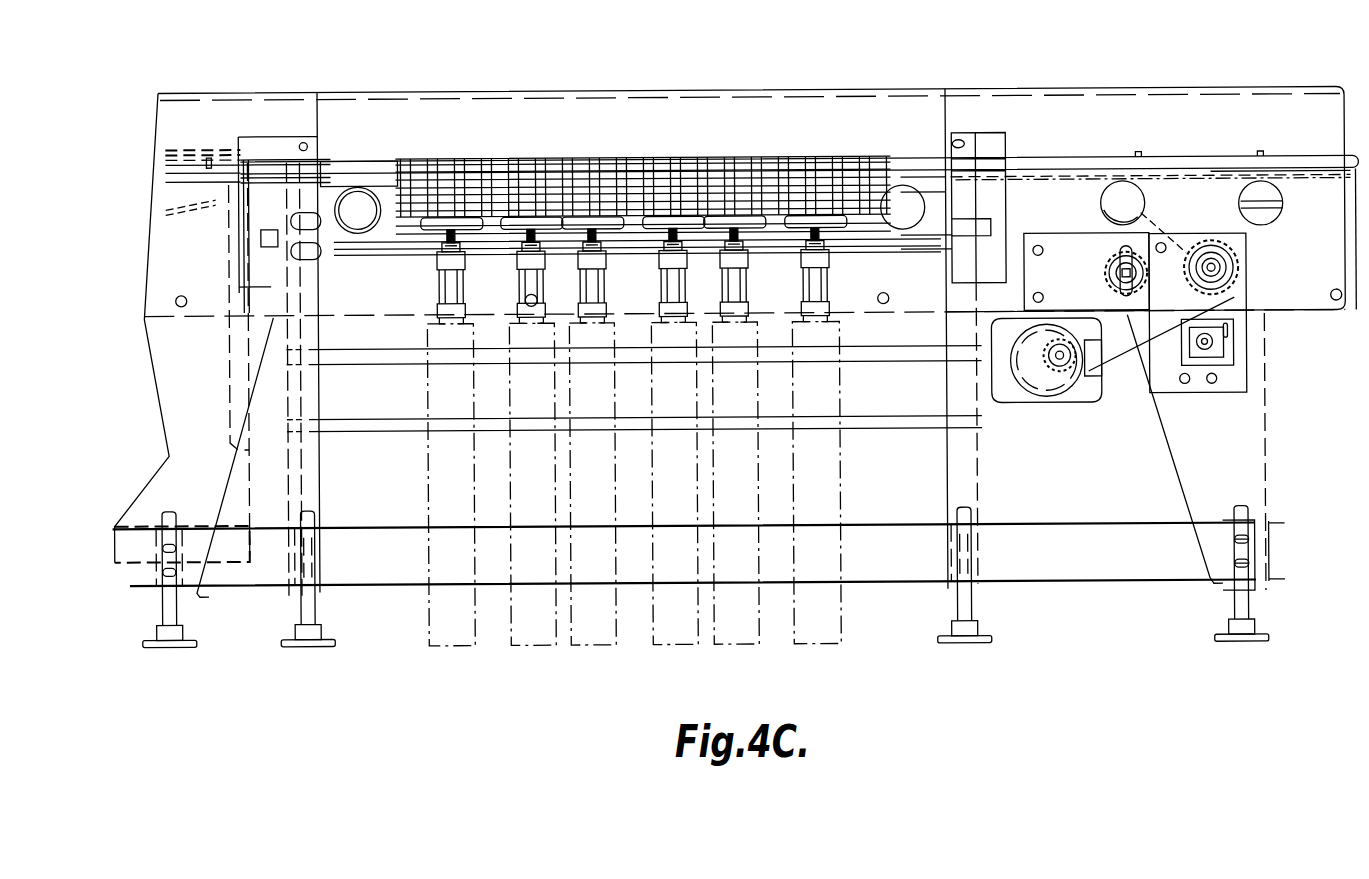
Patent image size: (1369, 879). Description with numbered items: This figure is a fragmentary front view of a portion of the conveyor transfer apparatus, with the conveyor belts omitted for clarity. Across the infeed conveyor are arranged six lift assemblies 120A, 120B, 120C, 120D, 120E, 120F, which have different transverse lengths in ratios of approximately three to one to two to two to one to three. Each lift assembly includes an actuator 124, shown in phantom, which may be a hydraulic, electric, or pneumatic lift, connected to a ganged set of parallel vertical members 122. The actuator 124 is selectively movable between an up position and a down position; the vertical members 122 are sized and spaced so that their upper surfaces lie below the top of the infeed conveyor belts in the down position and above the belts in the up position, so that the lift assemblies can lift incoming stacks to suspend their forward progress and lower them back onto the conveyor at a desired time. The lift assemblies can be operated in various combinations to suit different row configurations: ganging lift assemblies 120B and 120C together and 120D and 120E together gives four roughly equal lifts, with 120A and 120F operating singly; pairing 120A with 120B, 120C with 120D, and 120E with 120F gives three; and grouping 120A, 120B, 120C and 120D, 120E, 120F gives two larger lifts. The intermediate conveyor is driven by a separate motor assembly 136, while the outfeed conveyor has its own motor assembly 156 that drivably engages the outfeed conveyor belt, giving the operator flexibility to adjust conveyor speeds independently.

The vertical members 122 is at (398, 174).
The lift assembly 120A is at (434, 289).
The lift assembly 120B is at (516, 285).
The lift assembly 120C is at (574, 285).
The lift assembly 120D is at (687, 285).
The lift assembly 120E is at (748, 287).
The lift assembly 120F is at (833, 284).
The motor assembly 136 is at (474, 264).
The motor assembly 156 is at (1019, 404).
The actuator 124 is at (570, 630).